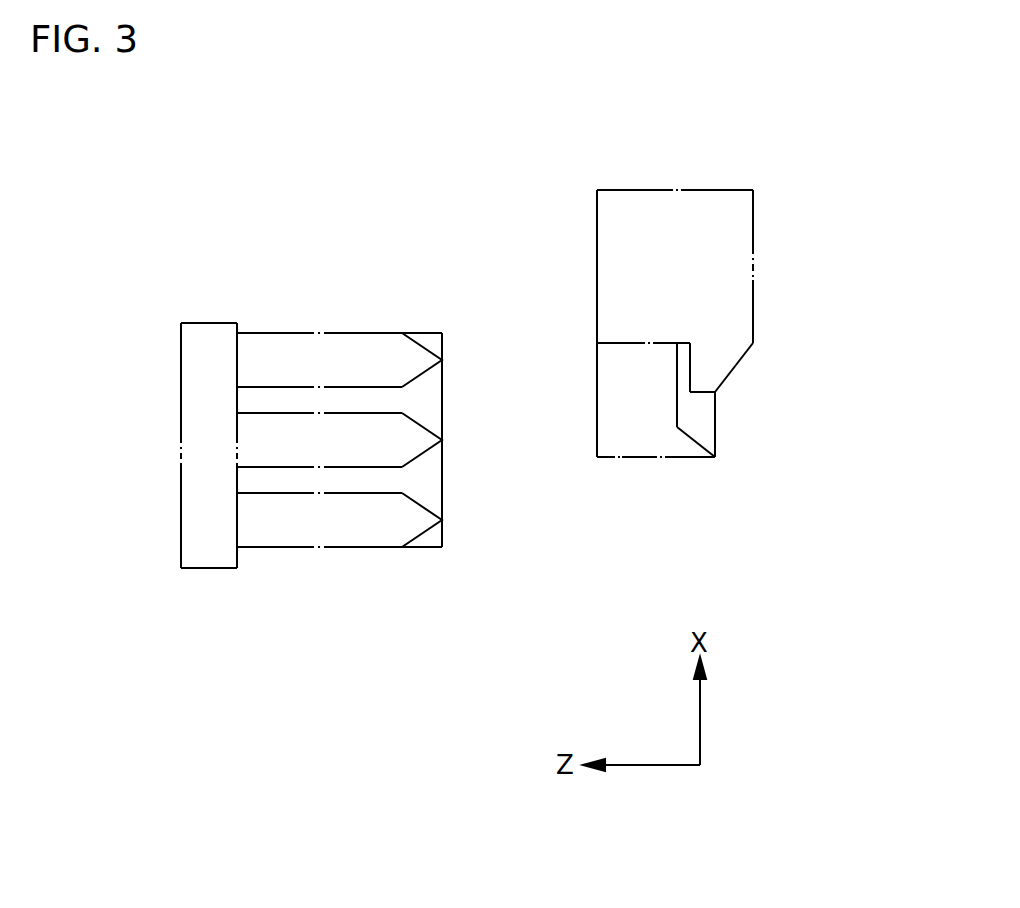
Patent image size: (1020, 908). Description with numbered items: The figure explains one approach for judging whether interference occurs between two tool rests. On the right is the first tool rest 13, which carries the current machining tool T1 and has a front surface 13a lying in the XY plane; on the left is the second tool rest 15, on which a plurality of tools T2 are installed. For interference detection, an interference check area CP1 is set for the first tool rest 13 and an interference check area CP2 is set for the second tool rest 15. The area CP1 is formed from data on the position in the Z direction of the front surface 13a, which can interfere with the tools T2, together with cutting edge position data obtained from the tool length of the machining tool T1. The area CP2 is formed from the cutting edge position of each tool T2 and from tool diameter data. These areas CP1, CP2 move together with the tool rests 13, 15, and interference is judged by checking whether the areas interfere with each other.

The second tool rest 15 is at (293, 328).
The tools installed on the second tool rest T2 is at (325, 353).
The interference check area for the second tool rest CP2 is at (443, 494).
The first tool rest 13 is at (767, 277).
The front surface of the first tool rest 13a is at (597, 297).
The current machining tool T1 is at (712, 427).
The interference check area for the first tool rest CP1 is at (632, 460).